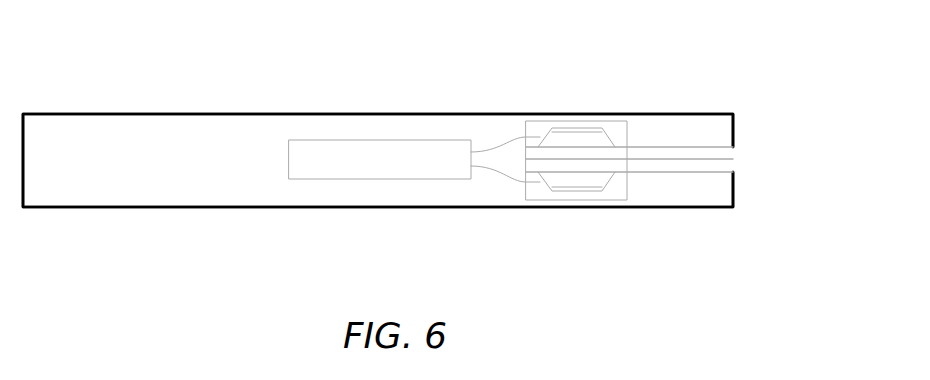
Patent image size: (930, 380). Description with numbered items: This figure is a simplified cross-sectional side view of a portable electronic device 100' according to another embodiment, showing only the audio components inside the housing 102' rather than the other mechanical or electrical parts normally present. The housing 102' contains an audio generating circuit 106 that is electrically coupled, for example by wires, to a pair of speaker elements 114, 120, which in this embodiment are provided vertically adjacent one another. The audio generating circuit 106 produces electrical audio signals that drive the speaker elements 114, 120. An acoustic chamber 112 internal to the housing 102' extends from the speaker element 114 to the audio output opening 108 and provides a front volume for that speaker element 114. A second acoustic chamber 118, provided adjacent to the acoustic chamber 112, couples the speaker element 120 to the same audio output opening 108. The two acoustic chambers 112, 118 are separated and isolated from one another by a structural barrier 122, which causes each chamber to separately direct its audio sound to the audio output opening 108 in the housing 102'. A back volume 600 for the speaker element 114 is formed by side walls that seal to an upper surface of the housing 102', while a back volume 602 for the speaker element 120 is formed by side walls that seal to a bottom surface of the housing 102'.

The portable electronic device 100' is at (378, 104).
The housing 102' is at (378, 123).
The audio generating circuit 106 is at (360, 140).
The audio output opening 108 is at (768, 159).
The acoustic chamber 112 is at (720, 150).
The speaker element 114 is at (560, 130).
The acoustic chamber 118 is at (720, 165).
The speaker element 120 is at (552, 192).
The structural barrier 122 is at (652, 161).
The back volume 600 is at (616, 132).
The back volume 602 is at (612, 193).